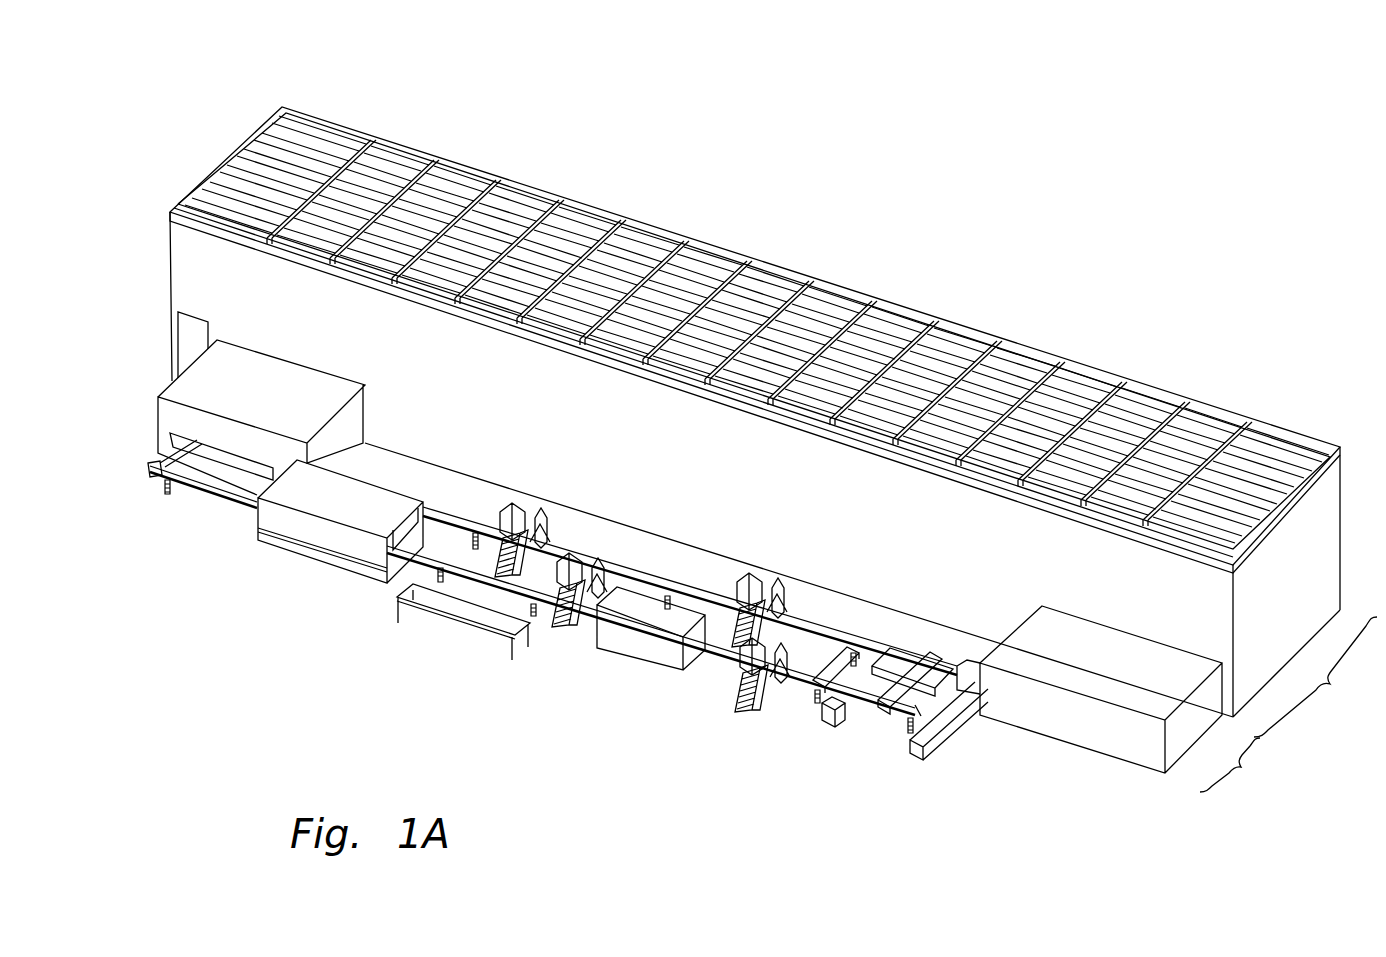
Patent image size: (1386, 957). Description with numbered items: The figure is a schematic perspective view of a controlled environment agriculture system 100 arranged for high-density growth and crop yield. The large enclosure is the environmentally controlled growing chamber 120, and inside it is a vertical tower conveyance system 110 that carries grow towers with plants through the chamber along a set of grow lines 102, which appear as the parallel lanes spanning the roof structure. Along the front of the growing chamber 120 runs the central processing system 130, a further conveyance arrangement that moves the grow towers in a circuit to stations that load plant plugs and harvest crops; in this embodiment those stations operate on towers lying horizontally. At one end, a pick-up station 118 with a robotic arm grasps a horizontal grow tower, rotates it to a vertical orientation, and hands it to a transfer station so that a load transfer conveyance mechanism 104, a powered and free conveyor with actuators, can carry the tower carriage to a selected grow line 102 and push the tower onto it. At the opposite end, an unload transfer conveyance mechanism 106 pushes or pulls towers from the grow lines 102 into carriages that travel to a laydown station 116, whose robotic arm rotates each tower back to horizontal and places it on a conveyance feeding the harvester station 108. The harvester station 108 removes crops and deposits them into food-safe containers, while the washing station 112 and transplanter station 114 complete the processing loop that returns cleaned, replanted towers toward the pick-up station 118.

The controlled environment agriculture system 100 is at (1230, 163).
The grow line 102 is at (965, 360).
The load transfer conveyance mechanism 104 is at (312, 168).
The unload transfer conveyance mechanism 106 is at (1262, 478).
The harvester station 108 is at (920, 748).
The vertical tower conveyance system 110 is at (775, 265).
The washing station 112 is at (660, 655).
The transplanter station 114 is at (280, 548).
The laydown station 116 is at (1130, 752).
The pick-up station 118 is at (165, 418).
The environmentally controlled growing chamber 120 is at (1315, 677).
The central processing system 130 is at (1244, 765).